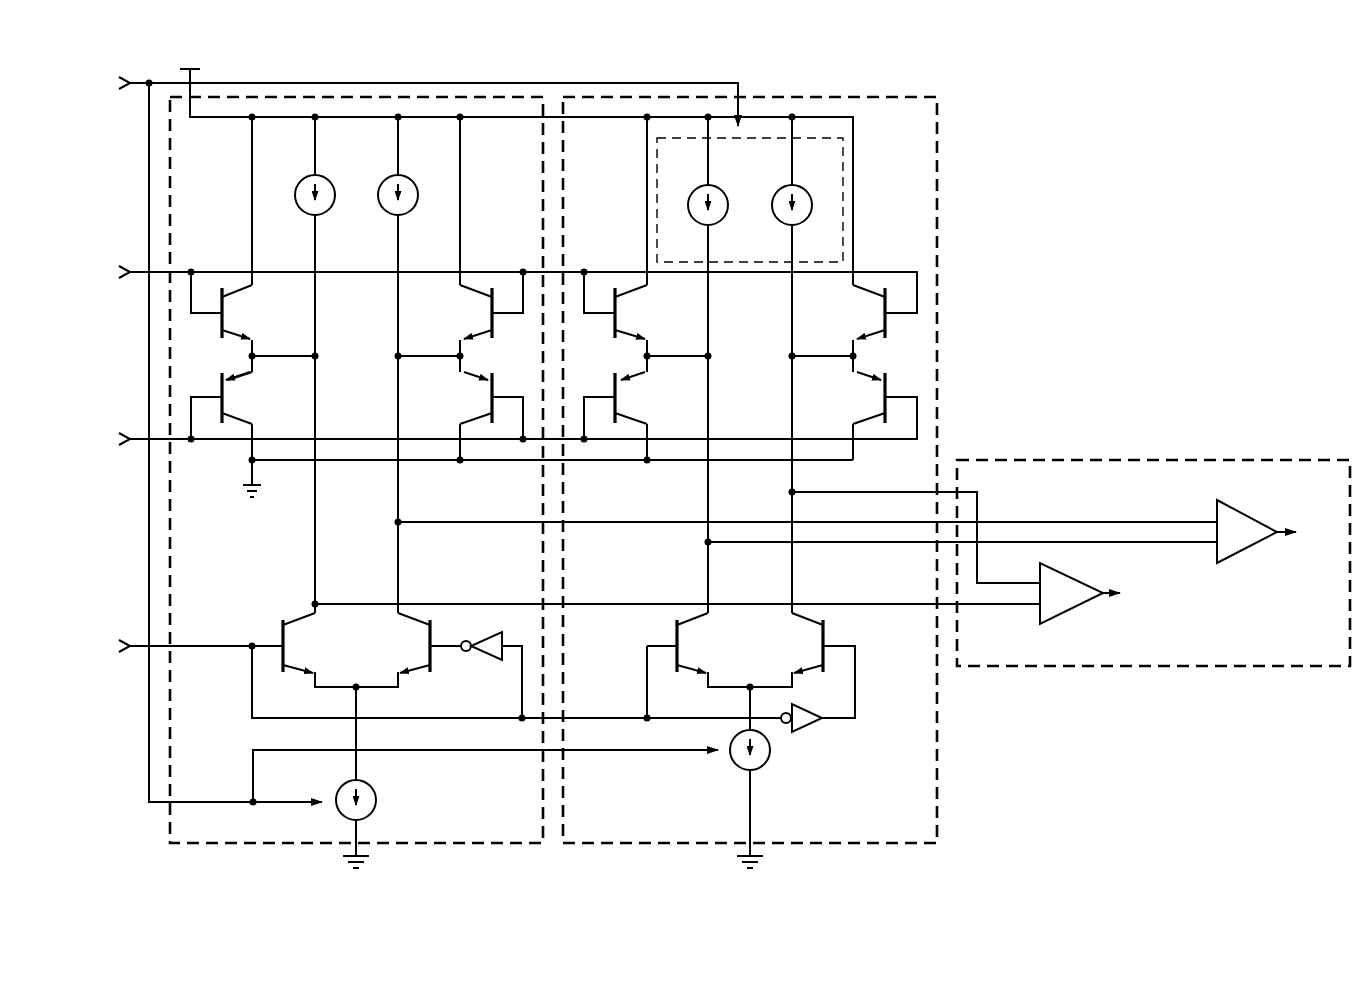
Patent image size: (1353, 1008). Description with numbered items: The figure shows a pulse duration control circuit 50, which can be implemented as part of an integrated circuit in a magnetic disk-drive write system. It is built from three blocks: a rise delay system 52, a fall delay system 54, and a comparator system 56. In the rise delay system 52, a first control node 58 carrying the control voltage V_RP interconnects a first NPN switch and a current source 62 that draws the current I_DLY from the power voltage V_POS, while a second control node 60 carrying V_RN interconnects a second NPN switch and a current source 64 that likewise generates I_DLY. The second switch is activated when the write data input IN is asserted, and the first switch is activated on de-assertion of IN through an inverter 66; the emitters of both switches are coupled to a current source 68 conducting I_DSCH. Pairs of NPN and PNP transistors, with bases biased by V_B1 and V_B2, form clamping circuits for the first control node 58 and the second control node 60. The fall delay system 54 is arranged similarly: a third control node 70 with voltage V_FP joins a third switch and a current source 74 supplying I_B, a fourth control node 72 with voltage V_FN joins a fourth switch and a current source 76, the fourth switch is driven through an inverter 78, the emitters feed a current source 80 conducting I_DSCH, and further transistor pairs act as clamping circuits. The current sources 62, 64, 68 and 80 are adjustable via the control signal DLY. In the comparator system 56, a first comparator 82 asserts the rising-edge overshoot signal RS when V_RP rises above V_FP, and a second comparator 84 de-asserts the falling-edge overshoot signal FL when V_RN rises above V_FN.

The pulse duration control circuit 50 is at (1190, 211).
The rise delay system 52 is at (943, 222).
The fall delay system 54 is at (164, 819).
The comparator system 56 is at (1268, 457).
The first control node 58 is at (776, 507).
The second control node 60 is at (698, 554).
The current source 62 is at (770, 186).
The current source 64 is at (695, 182).
The inverter 66 is at (812, 732).
The current source 68 is at (768, 766).
The third control node 70 is at (302, 592).
The fourth control node 72 is at (411, 534).
The current source 74 is at (300, 216).
The current source 76 is at (382, 216).
The inverter 78 is at (478, 660).
The current source 80 is at (376, 812).
The first comparator 82 is at (1074, 610).
The second comparator 84 is at (1250, 516).